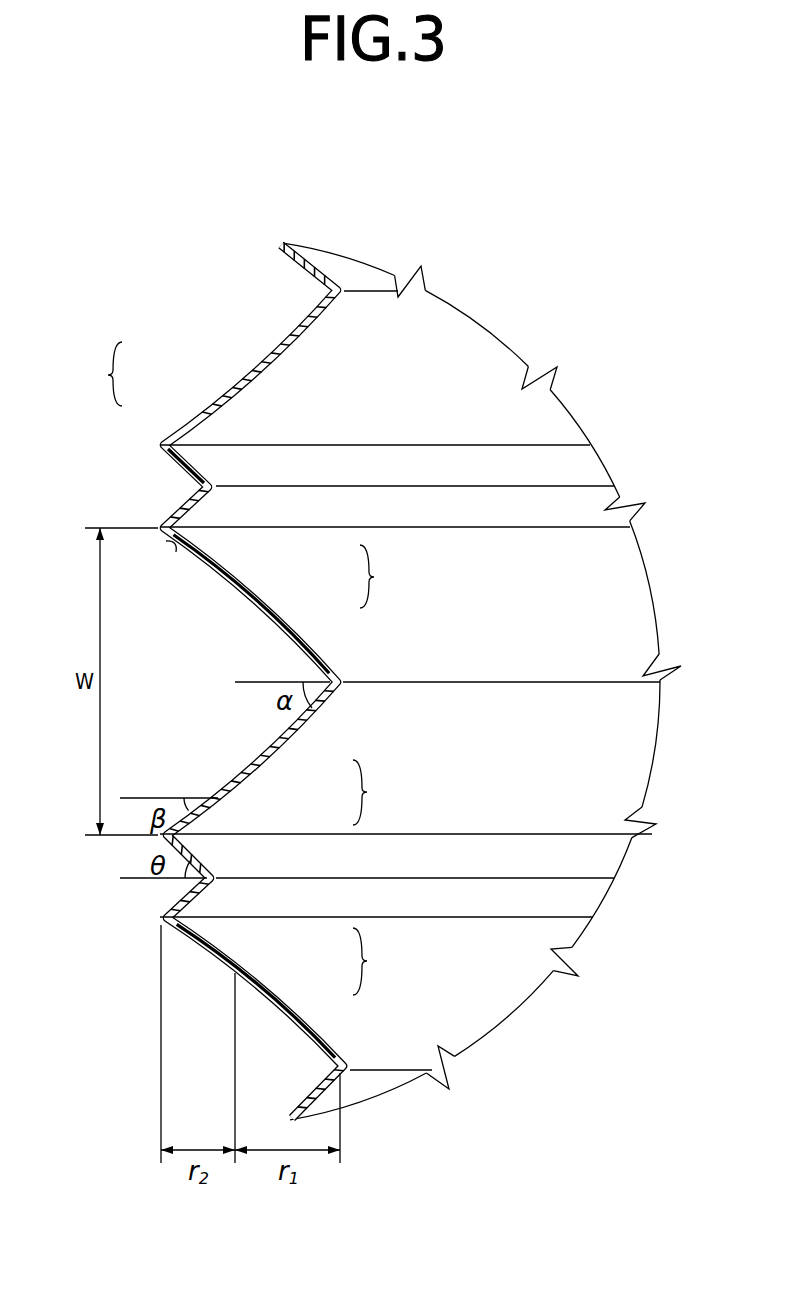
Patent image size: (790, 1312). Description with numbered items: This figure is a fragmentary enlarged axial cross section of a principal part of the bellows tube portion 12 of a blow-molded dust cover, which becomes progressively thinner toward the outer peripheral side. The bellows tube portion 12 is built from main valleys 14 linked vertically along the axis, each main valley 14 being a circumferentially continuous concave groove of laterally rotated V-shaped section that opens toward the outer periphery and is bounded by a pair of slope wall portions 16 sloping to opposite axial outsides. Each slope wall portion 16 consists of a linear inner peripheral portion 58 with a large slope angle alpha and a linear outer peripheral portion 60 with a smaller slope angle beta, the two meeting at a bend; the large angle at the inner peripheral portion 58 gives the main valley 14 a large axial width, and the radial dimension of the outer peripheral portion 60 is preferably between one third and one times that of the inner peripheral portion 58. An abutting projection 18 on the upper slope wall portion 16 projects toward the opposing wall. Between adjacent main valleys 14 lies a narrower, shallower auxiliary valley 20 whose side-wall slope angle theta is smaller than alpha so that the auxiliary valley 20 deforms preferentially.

The bellows tube portion 12 is at (163, 287).
The main valley 14 is at (272, 297).
The slope wall portion 16 is at (237, 668).
The abutting projection 18 is at (170, 551).
The auxiliary valley 20 is at (168, 497).
The inner peripheral portion 58 is at (278, 348).
The outer peripheral portion 60 is at (190, 422).